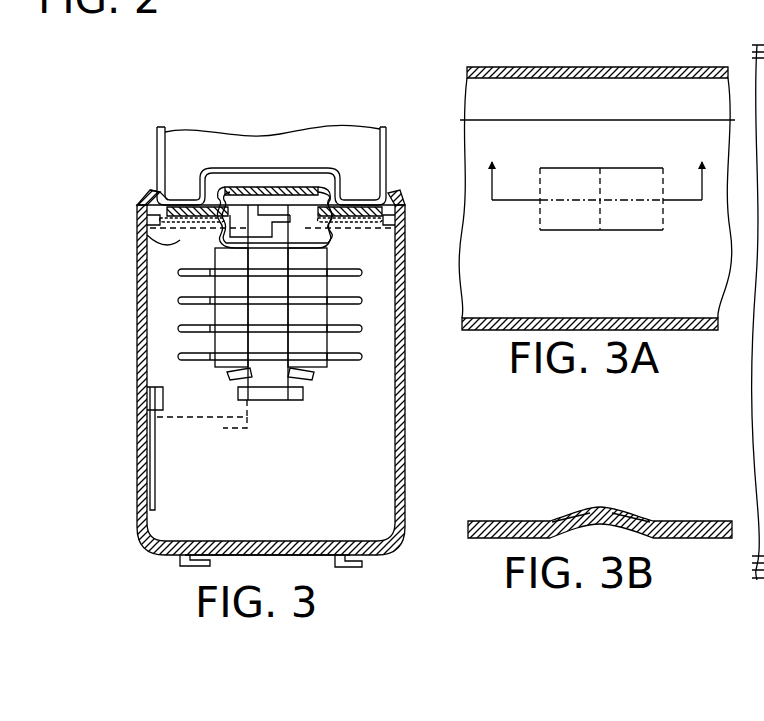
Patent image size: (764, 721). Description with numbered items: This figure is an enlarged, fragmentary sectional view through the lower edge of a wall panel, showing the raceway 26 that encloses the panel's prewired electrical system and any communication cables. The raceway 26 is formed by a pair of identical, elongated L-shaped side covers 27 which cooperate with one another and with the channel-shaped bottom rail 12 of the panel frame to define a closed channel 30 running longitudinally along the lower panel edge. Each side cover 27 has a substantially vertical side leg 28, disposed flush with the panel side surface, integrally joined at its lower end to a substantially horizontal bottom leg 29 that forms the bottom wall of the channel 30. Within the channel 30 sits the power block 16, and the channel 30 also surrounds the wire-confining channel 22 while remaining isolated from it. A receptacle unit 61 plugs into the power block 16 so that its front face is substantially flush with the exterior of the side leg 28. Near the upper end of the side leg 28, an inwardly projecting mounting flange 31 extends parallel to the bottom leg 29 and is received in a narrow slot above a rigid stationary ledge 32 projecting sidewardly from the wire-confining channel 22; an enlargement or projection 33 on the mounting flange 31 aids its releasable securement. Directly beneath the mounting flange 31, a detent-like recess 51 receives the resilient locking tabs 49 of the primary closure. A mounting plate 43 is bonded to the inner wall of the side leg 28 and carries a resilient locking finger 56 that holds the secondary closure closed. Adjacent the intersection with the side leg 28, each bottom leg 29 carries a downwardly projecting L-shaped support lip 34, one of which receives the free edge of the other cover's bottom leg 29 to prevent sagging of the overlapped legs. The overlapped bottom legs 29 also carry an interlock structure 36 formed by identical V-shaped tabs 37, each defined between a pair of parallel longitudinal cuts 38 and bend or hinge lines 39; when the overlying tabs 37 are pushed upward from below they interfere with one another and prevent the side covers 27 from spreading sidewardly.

In FIG. 3, the bottom rail 12 is at (160, 143).
In FIG. 3, the power block 16 is at (319, 389).
In FIG. 3, the wire-confining channel 22 is at (330, 240).
In FIG. 3, the raceway 26 is at (127, 345).
In FIG. 3, the side cover 27 is at (135, 389).
In FIG. 3, the side leg 28 is at (140, 318).
In FIG. 3A, the side leg 28 is at (620, 67).
In FIG. 3, the bottom leg 29 is at (283, 546).
In FIG. 3A, the bottom leg 29 is at (468, 88).
In FIG. 3B, the bottom leg 29 is at (705, 524).
In FIG. 3, the channel 30 is at (355, 455).
In FIG. 3, the mounting flange 31 is at (198, 208).
In FIG. 3, the ledge 32 is at (165, 243).
In FIG. 3, the projection 33 is at (158, 185).
In FIG. 3, the support lip 34 is at (203, 566).
In FIG. 3A, the interlock structure 36 is at (592, 246).
In FIG. 3B, the interlock structure 36 is at (588, 498).
In FIG. 3A, the V-shaped tab 37 is at (570, 178).
In FIG. 3B, the V-shaped tab 37 is at (558, 528).
In FIG. 3A, the cut 38 is at (650, 168).
In FIG. 3A, the hinge line 39 is at (540, 212).
In FIG. 3, the mounting plate 43 is at (155, 485).
In FIG. 3, the locking tab 49 is at (148, 218).
In FIG. 3, the recess 51 is at (145, 199).
In FIG. 3, the locking finger 56 is at (163, 395).
In FIG. 3, the receptacle unit 61 is at (222, 420).